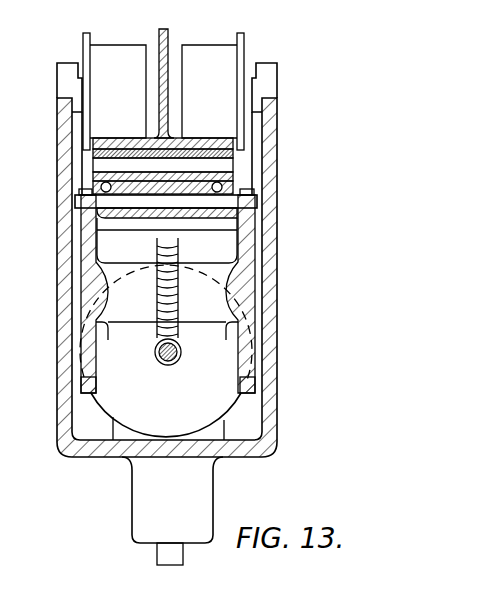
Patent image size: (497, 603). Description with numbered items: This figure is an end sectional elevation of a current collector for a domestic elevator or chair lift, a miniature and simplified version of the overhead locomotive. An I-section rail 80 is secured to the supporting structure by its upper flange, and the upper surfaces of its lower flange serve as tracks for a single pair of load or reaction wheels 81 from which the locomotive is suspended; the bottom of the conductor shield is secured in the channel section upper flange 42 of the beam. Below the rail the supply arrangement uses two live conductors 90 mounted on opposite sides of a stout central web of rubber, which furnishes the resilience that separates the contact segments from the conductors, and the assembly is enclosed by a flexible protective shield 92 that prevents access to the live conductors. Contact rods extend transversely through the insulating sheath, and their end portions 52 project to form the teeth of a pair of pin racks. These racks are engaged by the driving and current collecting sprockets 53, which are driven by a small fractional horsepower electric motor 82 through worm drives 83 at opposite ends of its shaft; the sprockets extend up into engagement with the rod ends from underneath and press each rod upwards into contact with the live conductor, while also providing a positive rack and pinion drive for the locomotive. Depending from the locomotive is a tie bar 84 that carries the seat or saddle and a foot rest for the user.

The load bearing wheels 81 is at (222, 65).
The rail 80 is at (168, 117).
The channel section upper flange 42 is at (228, 154).
The flexible protective shield 92 is at (230, 182).
The end portions 52 is at (245, 197).
The live conductors 90 is at (233, 210).
The sprockets 53 is at (247, 237).
The worm drives 83 is at (181, 359).
The electric motor 82 is at (232, 403).
The tie bar 84 is at (172, 555).